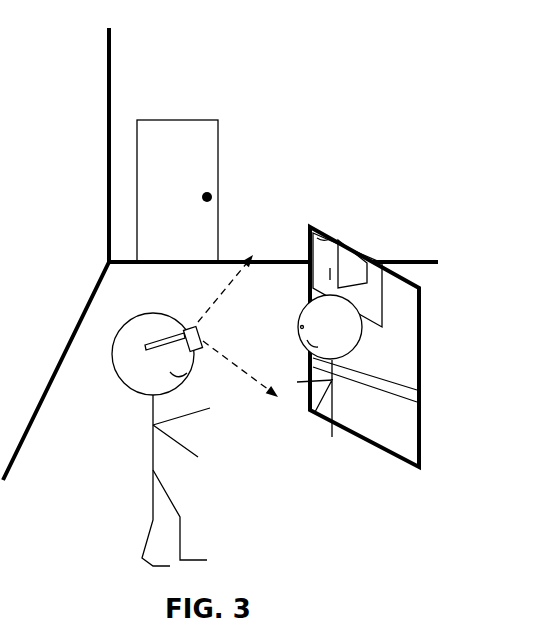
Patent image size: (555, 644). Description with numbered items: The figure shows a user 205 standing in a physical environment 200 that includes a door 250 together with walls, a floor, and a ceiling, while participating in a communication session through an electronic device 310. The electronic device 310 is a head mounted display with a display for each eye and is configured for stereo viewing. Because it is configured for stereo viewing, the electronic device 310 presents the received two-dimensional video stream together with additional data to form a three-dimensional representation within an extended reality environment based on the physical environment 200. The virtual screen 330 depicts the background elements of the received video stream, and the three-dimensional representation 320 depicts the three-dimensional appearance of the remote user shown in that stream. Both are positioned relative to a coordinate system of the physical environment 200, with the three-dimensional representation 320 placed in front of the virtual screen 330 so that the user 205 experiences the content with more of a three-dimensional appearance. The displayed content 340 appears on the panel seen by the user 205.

The physical environment 200 is at (45, 166).
The user 205 is at (153, 435).
The door 250 is at (168, 120).
The electronic device 310 is at (190, 327).
The 3D representation 320 is at (300, 325).
The virtual screen 330 is at (349, 243).
The representation of physical environment 340 is at (398, 318).